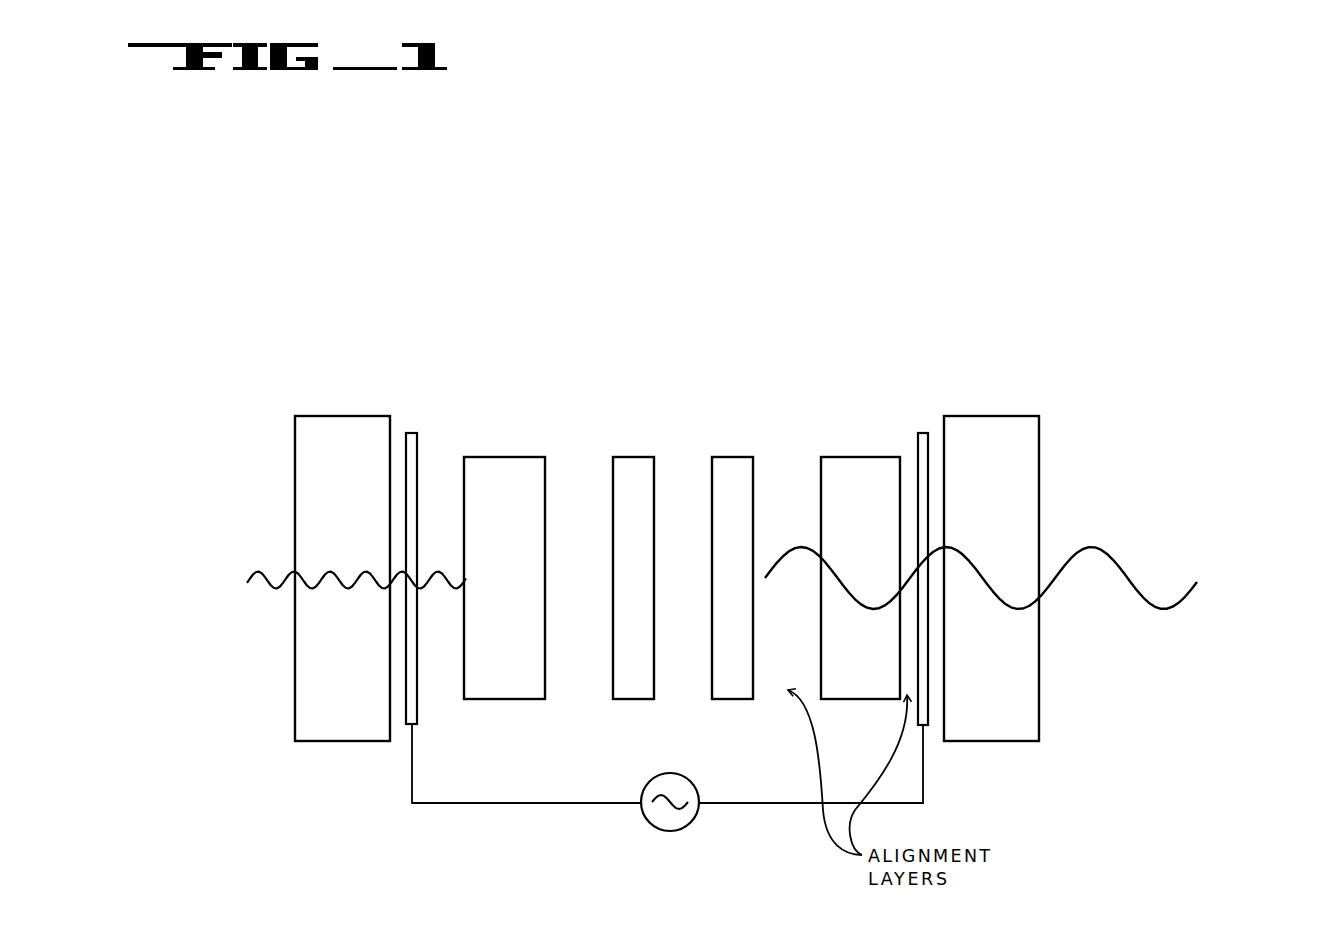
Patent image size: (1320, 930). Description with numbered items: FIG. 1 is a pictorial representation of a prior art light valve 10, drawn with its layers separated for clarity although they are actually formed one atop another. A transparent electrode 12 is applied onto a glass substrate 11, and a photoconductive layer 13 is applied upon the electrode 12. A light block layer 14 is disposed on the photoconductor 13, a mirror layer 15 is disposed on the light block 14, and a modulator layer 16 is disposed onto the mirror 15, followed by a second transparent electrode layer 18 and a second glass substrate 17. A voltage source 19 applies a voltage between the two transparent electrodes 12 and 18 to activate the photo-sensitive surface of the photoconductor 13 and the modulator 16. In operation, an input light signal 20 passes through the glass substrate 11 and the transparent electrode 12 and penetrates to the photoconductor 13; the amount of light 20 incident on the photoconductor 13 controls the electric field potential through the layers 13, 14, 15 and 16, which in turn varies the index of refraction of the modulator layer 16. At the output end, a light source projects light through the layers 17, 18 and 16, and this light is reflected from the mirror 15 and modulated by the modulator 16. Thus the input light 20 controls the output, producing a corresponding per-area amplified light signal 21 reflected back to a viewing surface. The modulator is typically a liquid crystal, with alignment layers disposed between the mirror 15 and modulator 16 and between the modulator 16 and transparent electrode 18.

The light valve 10 is at (585, 148).
The glass substrate 11 is at (372, 414).
The transparent electrode 12 is at (450, 287).
The photoconductive layer 13 is at (505, 455).
The light block layer 14 is at (637, 455).
The mirror layer 15 is at (738, 456).
The modulator layer 16 is at (863, 456).
The second glass substrate 17 is at (988, 416).
The second transparent electrode layer 18 is at (926, 432).
The voltage source 19 is at (690, 825).
The input light signal 20 is at (258, 568).
The amplified light signal 21 is at (1263, 533).